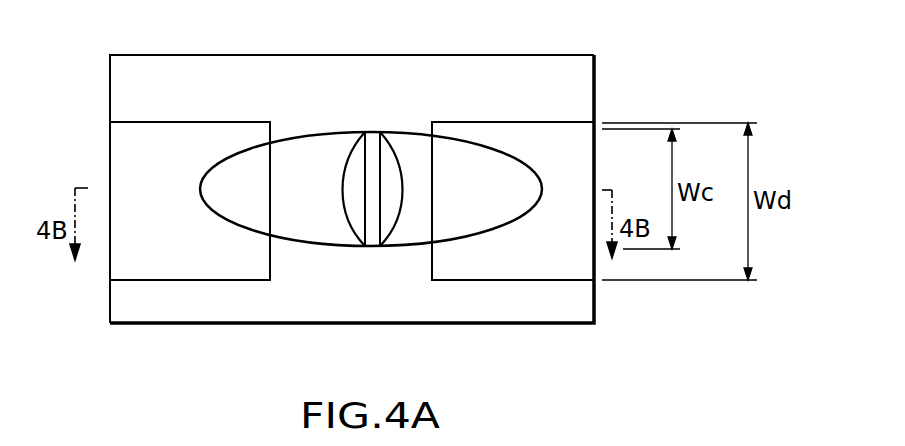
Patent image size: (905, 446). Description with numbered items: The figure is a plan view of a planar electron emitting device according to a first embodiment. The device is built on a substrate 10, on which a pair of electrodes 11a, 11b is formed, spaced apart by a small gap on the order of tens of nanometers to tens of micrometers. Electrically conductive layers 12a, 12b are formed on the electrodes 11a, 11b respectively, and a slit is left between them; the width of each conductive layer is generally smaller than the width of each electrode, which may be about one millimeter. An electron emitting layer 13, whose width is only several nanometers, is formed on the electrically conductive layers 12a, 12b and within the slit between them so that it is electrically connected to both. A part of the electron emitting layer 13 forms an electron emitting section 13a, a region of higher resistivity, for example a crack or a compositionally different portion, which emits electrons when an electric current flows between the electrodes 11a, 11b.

The substrate 10 is at (111, 92).
The electrode 11a is at (111, 155).
The electrode 11b is at (570, 135).
The electrically conductive layer 12a is at (313, 235).
The electrically conductive layer 12b is at (400, 233).
The electron emitting layer 13 is at (340, 155).
The electron emitting section 13a is at (390, 164).